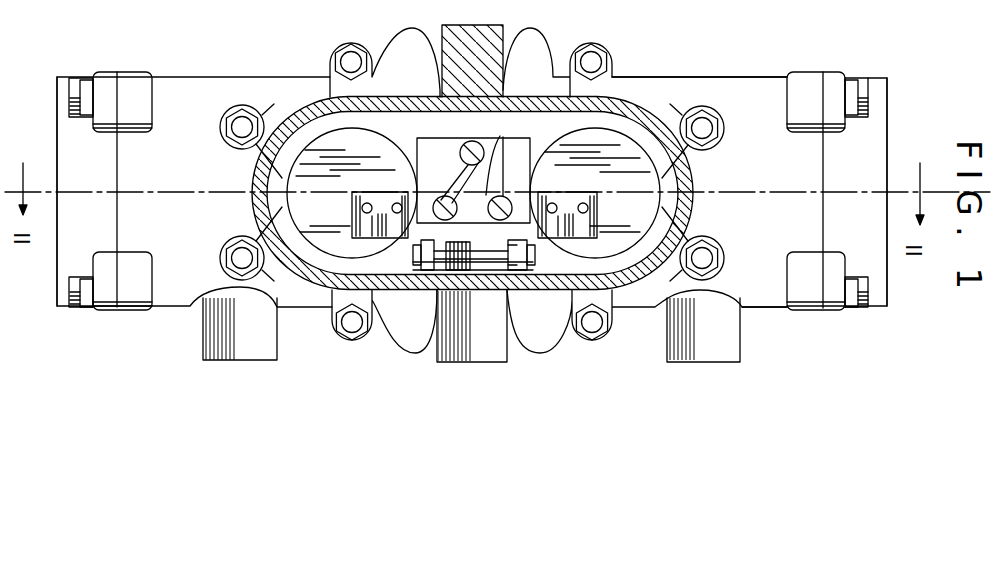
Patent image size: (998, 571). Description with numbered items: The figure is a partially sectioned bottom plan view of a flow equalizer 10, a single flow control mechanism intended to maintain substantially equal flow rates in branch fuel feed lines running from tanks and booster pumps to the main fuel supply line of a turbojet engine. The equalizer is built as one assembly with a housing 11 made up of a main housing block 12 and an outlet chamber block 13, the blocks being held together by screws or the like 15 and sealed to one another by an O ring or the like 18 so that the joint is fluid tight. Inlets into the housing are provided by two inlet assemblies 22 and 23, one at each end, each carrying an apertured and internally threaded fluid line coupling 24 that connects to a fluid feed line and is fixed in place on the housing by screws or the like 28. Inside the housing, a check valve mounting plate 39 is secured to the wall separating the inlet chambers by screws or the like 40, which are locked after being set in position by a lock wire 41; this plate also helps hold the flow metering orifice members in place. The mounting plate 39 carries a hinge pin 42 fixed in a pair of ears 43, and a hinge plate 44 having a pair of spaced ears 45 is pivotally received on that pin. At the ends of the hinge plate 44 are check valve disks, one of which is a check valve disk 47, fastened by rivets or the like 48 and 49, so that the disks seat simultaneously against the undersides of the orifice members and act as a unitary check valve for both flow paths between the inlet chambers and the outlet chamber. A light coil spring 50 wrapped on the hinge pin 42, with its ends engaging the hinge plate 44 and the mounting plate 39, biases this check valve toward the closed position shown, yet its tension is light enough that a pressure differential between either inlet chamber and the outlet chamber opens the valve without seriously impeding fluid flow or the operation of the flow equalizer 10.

The flow equalizer 10 is at (230, 72).
The housing 11 is at (750, 77).
The main housing block 12 is at (766, 228).
The outlet chamber block 13 is at (295, 118).
The screws 15 is at (350, 62).
The O ring 18 is at (712, 1).
The inlet assembly 22 is at (825, 68).
The inlet assembly 23 is at (110, 67).
The fluid line coupling 24 is at (72, 132).
The screws 28 is at (88, 83).
The check valve mounting plate 39 is at (435, 152).
The screws 40 is at (500, 153).
The lock wire 41 is at (472, 182).
The hinge pin 42 is at (468, 256).
The ears 43 is at (525, 250).
The hinge plate 44 is at (510, 258).
The spaced ears 45 is at (428, 243).
The check valve disk 47 is at (352, 193).
The rivet 48 is at (583, 207).
The rivet 49 is at (397, 207).
The coil spring 50 is at (472, 268).